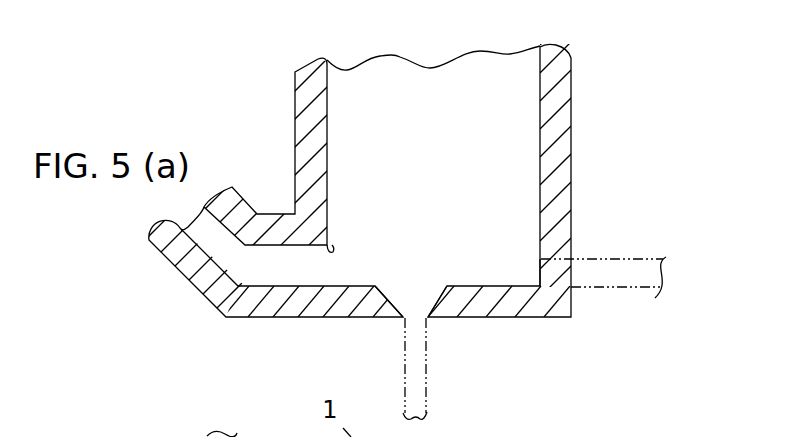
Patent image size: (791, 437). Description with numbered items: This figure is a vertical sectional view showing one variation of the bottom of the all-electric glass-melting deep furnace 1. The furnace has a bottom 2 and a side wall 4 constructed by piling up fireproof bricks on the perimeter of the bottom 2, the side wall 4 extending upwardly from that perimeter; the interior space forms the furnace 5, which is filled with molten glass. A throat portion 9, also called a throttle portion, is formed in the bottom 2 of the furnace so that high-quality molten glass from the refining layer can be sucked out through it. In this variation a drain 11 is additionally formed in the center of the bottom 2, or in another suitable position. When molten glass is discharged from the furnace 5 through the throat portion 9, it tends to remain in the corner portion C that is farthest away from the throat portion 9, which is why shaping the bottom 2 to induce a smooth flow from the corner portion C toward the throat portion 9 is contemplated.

The all-electric glass-melting deep furnace 1 is at (266, 133).
The bottom 2 is at (377, 287).
The side wall 4 is at (574, 112).
The furnace 5 is at (350, 82).
The throat portion 9 is at (330, 253).
The drain 11 is at (403, 320).
The corner portion C is at (533, 277).